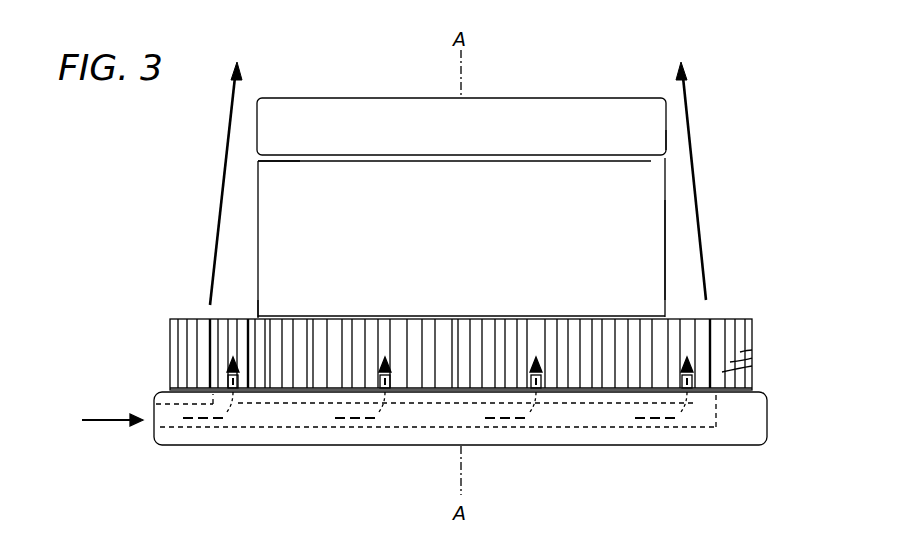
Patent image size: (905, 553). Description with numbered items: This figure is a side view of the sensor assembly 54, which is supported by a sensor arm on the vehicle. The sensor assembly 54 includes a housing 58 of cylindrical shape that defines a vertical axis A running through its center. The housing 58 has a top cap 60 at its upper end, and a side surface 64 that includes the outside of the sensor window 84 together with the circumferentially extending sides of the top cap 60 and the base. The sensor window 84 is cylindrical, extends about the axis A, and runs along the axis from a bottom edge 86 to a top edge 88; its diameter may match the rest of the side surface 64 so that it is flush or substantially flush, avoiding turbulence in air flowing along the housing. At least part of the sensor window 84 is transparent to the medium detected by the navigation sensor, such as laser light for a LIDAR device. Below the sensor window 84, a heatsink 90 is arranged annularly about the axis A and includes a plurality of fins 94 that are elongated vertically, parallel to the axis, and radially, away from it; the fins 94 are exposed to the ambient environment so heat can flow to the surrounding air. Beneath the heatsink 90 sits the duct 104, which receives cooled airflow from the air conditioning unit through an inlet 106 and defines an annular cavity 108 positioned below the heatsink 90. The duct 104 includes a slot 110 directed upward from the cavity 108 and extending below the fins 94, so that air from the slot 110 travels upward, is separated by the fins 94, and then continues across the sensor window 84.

The sensor assembly 54 is at (727, 42).
The housing 58 is at (667, 141).
The top cap 60 is at (550, 98).
The side surface 64 is at (668, 182).
The sensor window 84 is at (668, 246).
The bottom edge 86 is at (275, 318).
The top edge 88 is at (297, 161).
The heatsink 90 is at (752, 322).
The fins 94 is at (728, 371).
The duct 104 is at (213, 446).
The inlet 106 is at (171, 430).
The annular cavity 108 is at (300, 429).
The slot 110 is at (716, 403).